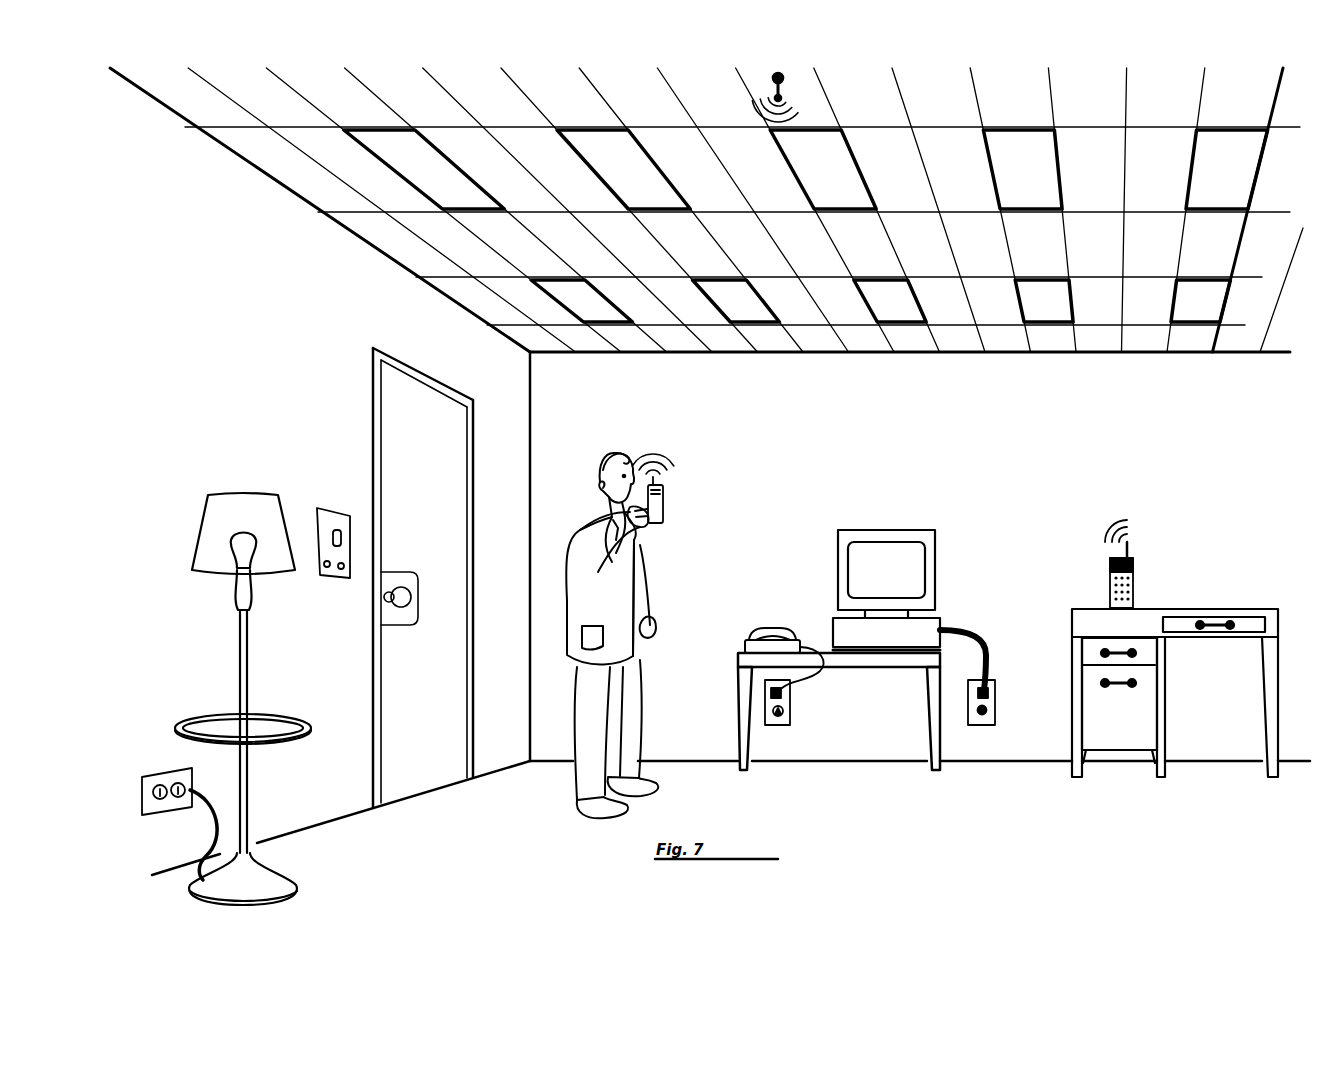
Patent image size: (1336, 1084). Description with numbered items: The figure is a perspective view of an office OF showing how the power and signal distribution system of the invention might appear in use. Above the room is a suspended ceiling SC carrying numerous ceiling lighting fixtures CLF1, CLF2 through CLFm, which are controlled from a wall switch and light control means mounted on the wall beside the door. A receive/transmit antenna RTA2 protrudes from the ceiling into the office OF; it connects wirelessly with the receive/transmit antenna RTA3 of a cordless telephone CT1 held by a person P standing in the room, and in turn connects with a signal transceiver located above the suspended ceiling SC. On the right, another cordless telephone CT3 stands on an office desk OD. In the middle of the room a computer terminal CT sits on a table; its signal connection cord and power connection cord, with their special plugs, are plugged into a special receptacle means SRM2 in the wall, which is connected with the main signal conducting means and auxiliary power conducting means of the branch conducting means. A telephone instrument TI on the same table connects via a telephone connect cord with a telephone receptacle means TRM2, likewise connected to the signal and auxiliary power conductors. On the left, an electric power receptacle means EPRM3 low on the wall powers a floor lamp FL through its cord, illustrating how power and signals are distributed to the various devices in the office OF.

The receive/transmit antenna RTA2 is at (784, 94).
The ceiling lighting fixture CLF1 is at (473, 184).
The ceiling lighting fixture CLF2 is at (673, 184).
The ceiling lighting fixture CLFm is at (862, 174).
The suspended ceiling SC is at (1139, 331).
The person P is at (583, 520).
The receive/transmit antenna RTA3 is at (667, 481).
The cordless telephone CT1 is at (663, 523).
The computer terminal CT is at (870, 530).
The office OF is at (1036, 500).
The office desk OD is at (1092, 608).
The cordless telephone CT3 is at (1133, 578).
The telephone instrument TI is at (770, 624).
The floor lamp FL is at (250, 622).
The special receptacle means SRM2 is at (998, 708).
The telephone receptacle means TRM2 is at (792, 712).
The electric power receptacle means EPRM3 is at (168, 770).